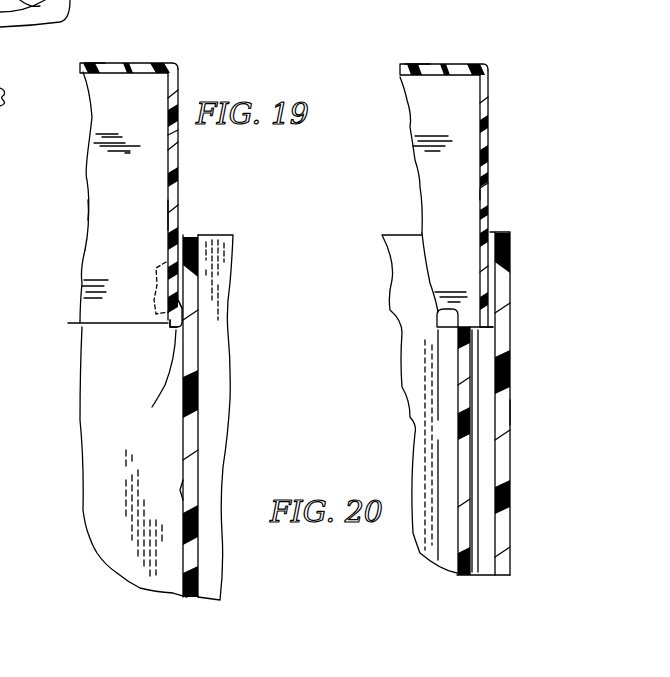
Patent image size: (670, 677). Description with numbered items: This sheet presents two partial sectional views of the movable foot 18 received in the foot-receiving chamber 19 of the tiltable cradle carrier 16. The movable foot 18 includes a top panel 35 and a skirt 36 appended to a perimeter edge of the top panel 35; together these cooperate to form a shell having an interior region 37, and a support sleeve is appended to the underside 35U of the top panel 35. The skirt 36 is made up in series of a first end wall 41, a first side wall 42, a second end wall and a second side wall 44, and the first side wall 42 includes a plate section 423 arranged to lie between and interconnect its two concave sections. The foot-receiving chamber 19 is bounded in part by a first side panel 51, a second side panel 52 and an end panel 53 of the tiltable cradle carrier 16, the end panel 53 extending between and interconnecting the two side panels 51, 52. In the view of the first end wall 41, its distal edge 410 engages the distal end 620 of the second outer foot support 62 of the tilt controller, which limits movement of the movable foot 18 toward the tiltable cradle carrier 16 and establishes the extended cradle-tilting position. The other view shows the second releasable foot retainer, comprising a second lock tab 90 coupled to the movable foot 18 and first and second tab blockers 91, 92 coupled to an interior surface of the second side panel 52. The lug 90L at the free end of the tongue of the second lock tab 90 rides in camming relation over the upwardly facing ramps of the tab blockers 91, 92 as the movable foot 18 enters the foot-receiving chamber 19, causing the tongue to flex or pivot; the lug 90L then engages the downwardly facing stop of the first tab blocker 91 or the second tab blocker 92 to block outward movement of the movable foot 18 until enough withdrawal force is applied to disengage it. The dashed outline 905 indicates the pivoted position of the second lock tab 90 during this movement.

In FIG. 19, the tiltable cradle carrier 16 is at (234, 238).
In FIG. 20, the tiltable cradle carrier 16 is at (512, 228).
In FIG. 19, the movable foot 18 is at (93, 63).
In FIG. 20, the movable foot 18 is at (422, 62).
In FIG. 19, the foot-receiving chamber 19 is at (103, 415).
In FIG. 19, the top panel 35 is at (140, 62).
In FIG. 20, the top panel 35 is at (467, 62).
In FIG. 19, the underside of top panel 35U is at (115, 76).
In FIG. 20, the underside of top panel 35U is at (445, 77).
In FIG. 19, the skirt 36 is at (185, 88).
In FIG. 20, the skirt 36 is at (489, 100).
In FIG. 19, the interior region 37 is at (138, 232).
In FIG. 20, the interior region 37 is at (467, 196).
In FIG. 19, the first end wall 41 is at (175, 137).
In FIG. 20, the first end wall 41 is at (437, 192).
In FIG. 19, the first side wall 42 is at (82, 272).
In FIG. 20, the second side wall 44 is at (490, 190).
In FIG. 19, the first side panel 51 is at (221, 8).
In FIG. 19, the second side panel 52 is at (200, 357).
In FIG. 20, the second side panel 52 is at (400, 260).
In FIG. 20, the end panel 53 is at (500, 410).
In FIG. 20, the second outer foot support 62 is at (448, 400).
In FIG. 19, the second lock tab 90 is at (166, 330).
In FIG. 19, the lug 90L is at (148, 382).
In FIG. 19, the first tab blocker 91 is at (182, 493).
In FIG. 19, the second tab blocker 92 is at (182, 307).
In FIG. 19, the hook outline 905 is at (170, 232).
In FIG. 20, the distal edge 410 is at (491, 328).
In FIG. 19, the plate section 423 is at (88, 208).
In FIG. 20, the distal end 620 is at (440, 310).